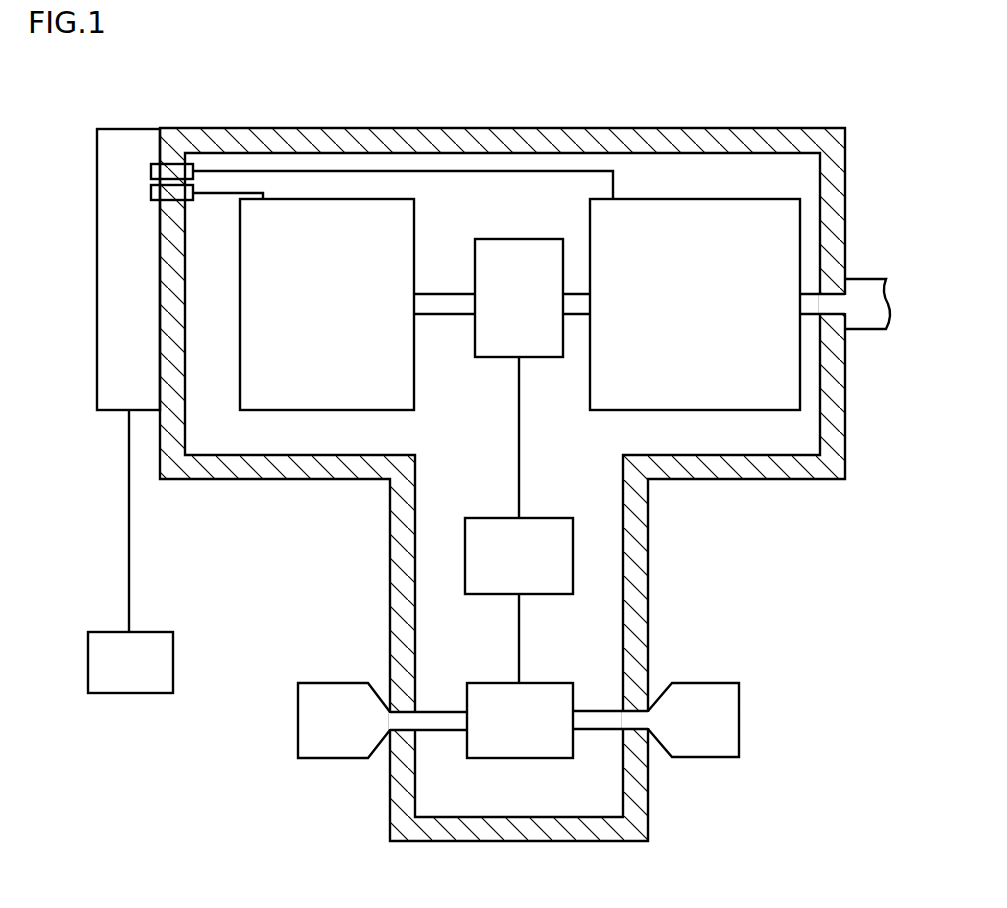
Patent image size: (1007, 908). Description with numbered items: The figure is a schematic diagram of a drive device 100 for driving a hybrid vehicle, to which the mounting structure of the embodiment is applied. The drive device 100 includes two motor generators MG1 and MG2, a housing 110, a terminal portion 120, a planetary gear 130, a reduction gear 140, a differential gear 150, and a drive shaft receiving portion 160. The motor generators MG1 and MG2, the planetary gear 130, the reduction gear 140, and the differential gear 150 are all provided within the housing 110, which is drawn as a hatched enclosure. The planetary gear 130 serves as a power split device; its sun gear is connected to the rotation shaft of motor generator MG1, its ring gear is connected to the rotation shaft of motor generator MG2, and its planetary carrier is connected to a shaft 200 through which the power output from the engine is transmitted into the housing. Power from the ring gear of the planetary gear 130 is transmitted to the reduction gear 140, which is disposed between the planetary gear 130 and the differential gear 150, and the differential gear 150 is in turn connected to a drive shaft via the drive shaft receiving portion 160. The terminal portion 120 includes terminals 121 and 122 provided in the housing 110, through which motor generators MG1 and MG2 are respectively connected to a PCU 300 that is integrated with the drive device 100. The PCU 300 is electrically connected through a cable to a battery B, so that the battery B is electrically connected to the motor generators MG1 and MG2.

The drive device 100 is at (801, 93).
The housing 110 is at (523, 832).
The terminal portion 120 is at (360, 124).
The terminal 121 is at (172, 166).
The terminal 122 is at (151, 192).
The planetary gear 130 is at (498, 358).
The reduction gear 140 is at (573, 577).
The differential gear 150 is at (500, 758).
The drive shaft receiving portion 160 is at (705, 748).
The shaft 200 is at (870, 316).
The PCU (Power Control Unit) 300 is at (97, 153).
The battery B is at (130, 695).
The motor generator MG1 is at (691, 199).
The motor generator MG2 is at (337, 199).